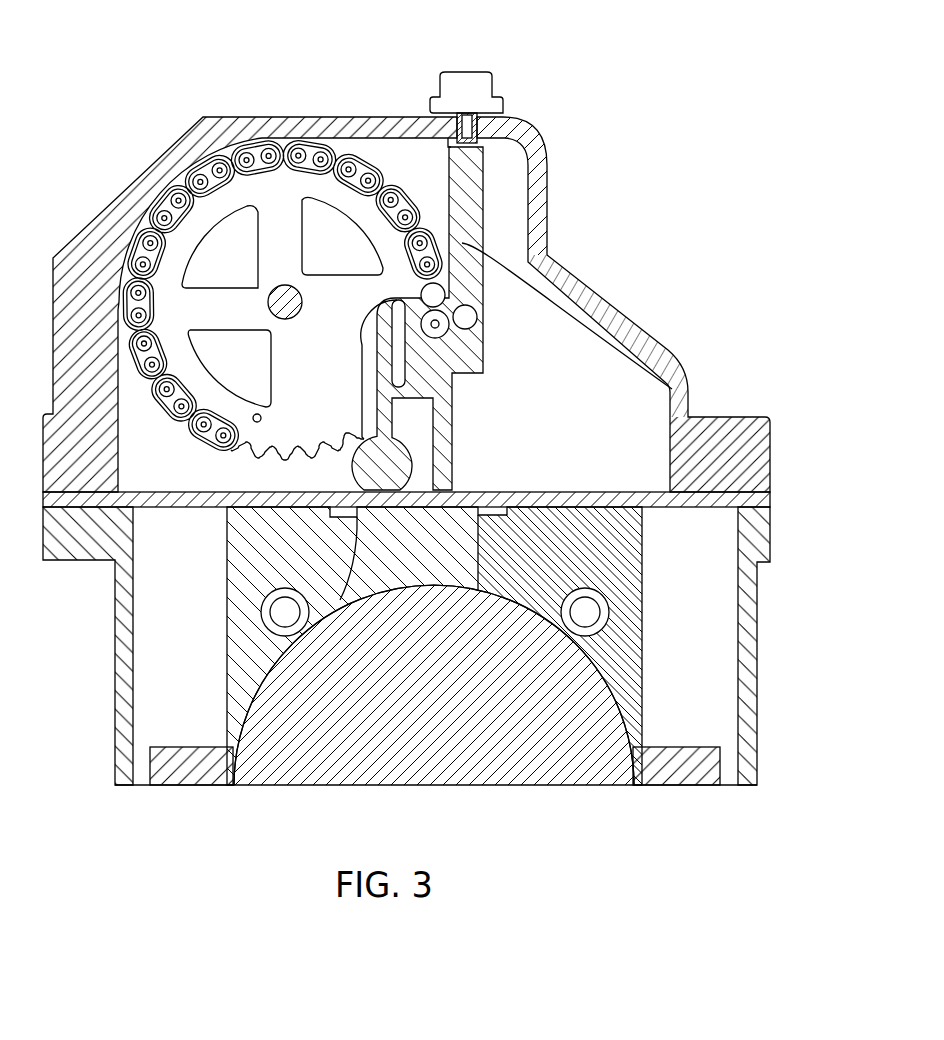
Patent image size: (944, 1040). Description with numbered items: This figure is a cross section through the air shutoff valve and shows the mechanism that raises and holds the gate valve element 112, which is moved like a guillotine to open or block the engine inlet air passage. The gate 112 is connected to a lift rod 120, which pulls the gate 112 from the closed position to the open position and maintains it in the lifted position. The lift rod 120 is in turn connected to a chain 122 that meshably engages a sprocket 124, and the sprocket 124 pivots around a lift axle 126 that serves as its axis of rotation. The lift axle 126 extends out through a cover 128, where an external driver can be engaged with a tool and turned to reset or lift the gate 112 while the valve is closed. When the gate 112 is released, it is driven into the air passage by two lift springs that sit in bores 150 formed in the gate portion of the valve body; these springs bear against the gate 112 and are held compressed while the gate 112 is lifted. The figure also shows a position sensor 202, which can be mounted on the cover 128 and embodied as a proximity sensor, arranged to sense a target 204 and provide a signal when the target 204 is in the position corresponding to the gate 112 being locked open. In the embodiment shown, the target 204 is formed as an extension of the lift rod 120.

The gate valve element 112 is at (537, 767).
The lift rod 120 is at (690, 390).
The chain 122 is at (362, 165).
The sprocket 124 is at (297, 185).
The lift axle 126 is at (283, 297).
The cover 128 is at (536, 158).
The bores 150 is at (733, 711).
The position sensor 202 is at (466, 96).
The target 204 is at (469, 186).